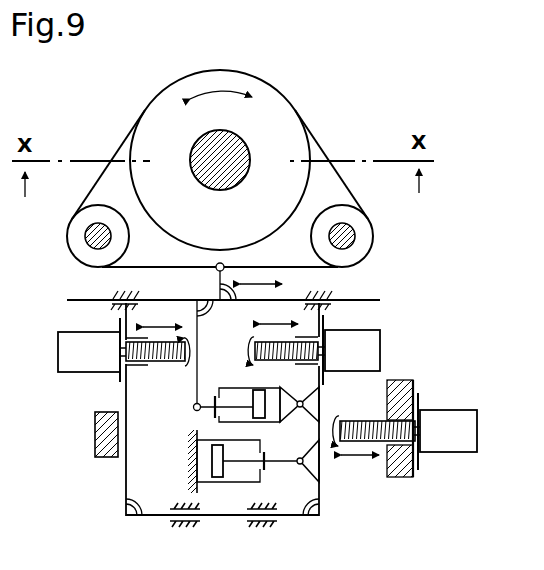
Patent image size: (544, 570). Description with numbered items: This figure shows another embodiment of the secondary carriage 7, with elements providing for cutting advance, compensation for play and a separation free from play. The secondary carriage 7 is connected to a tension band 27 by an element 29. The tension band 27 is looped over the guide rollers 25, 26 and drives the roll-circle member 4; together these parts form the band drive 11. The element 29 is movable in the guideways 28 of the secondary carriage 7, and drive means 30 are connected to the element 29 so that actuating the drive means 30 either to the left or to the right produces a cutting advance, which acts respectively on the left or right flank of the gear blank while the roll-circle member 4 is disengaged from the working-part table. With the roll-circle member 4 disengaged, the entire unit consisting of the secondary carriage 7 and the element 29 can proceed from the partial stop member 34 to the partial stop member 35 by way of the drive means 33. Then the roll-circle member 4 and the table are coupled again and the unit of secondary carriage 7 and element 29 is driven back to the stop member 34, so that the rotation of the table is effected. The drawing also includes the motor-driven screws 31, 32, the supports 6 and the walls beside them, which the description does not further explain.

The roll-circle member 4 is at (291, 93).
The band drive 11 is at (322, 135).
The tension band 27 is at (121, 149).
The guide roller 25 is at (80, 246).
The guide roller 26 is at (362, 237).
The guideways 28 is at (133, 298).
The element 29 is at (360, 298).
The drive means 30 is at (228, 386).
The left drive motor 31 is at (70, 353).
The right drive motor 32 is at (376, 345).
The drive means 33 is at (248, 478).
The partial stop member 34 is at (95, 436).
The partial stop member 35 is at (477, 430).
The secondary carriage 7 is at (155, 517).
The base support 6 is at (183, 528).